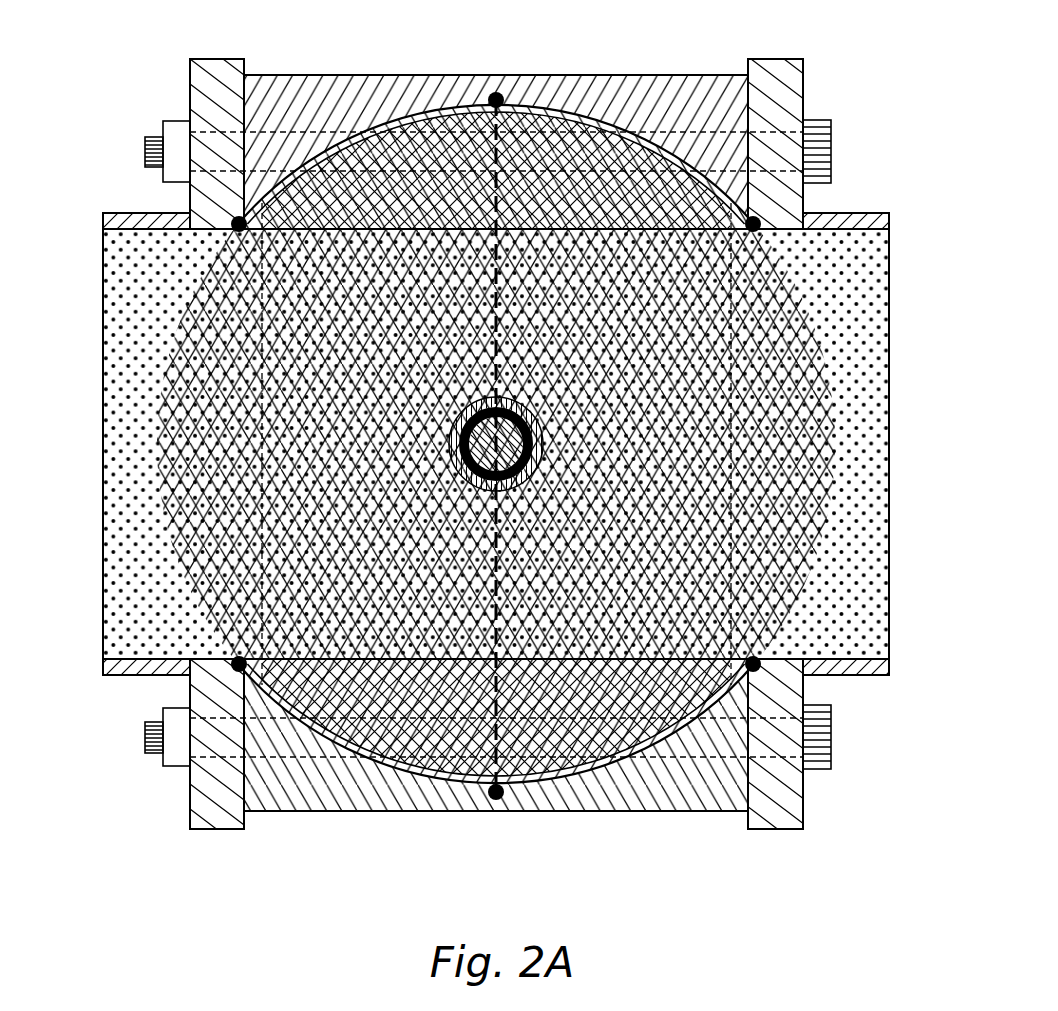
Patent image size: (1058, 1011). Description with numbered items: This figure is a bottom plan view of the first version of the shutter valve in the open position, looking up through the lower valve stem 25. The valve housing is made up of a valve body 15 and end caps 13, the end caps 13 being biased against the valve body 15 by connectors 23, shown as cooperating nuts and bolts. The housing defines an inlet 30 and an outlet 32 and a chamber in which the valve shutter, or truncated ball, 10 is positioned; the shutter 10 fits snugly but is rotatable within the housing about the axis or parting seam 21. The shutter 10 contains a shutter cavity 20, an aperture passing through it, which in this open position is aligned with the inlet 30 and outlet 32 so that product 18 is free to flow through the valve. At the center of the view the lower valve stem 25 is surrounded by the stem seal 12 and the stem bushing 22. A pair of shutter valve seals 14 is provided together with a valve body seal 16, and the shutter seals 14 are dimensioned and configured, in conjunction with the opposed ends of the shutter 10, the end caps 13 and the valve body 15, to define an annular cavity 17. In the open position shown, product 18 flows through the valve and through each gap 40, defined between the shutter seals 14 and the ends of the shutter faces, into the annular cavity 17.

The valve shutter 10 is at (408, 188).
The stem seal 12 is at (460, 448).
The end cap 13 is at (219, 63).
The shutter valve seal 14 is at (239, 224).
The valve body 15 is at (565, 82).
The valve body seal 16 is at (490, 99).
The annular cavity 17 is at (697, 152).
The product 18 is at (847, 388).
The shutter cavity 20 is at (663, 448).
The axis/parting seam 21 is at (500, 577).
The stem bushing 22 is at (457, 410).
The connector 23 is at (175, 122).
The lower valve stem 25 is at (460, 472).
The inlet 30 is at (103, 333).
The outlet 32 is at (889, 362).
The gap 40 is at (256, 660).